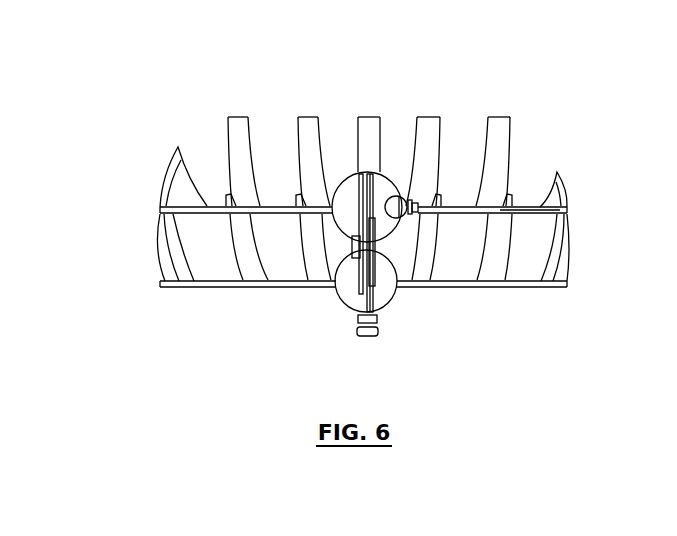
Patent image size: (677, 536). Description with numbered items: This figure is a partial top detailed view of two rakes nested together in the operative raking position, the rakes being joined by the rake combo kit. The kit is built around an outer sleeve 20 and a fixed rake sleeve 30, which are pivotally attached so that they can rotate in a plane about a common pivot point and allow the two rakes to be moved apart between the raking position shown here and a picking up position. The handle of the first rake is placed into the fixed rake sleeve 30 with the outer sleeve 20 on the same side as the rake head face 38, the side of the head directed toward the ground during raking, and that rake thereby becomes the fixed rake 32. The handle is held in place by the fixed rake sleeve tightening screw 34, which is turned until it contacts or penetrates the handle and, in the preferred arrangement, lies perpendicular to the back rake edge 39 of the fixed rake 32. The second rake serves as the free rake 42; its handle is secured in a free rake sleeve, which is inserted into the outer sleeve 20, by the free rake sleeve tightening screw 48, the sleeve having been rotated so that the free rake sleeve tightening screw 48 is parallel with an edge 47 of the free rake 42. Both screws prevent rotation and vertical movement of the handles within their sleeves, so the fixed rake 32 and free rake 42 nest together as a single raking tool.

The outer sleeve 20 is at (342, 177).
The fixed rake sleeve 30 is at (341, 300).
The fixed rake 32 is at (152, 283).
The fixed rake sleeve tightening screw 34 is at (378, 333).
The rake head face 38 is at (490, 252).
The back rake edge 39 is at (216, 288).
The free rake 42 is at (201, 197).
The edge of free rake 47 is at (533, 210).
The free rake sleeve tightening screw 48 is at (392, 195).